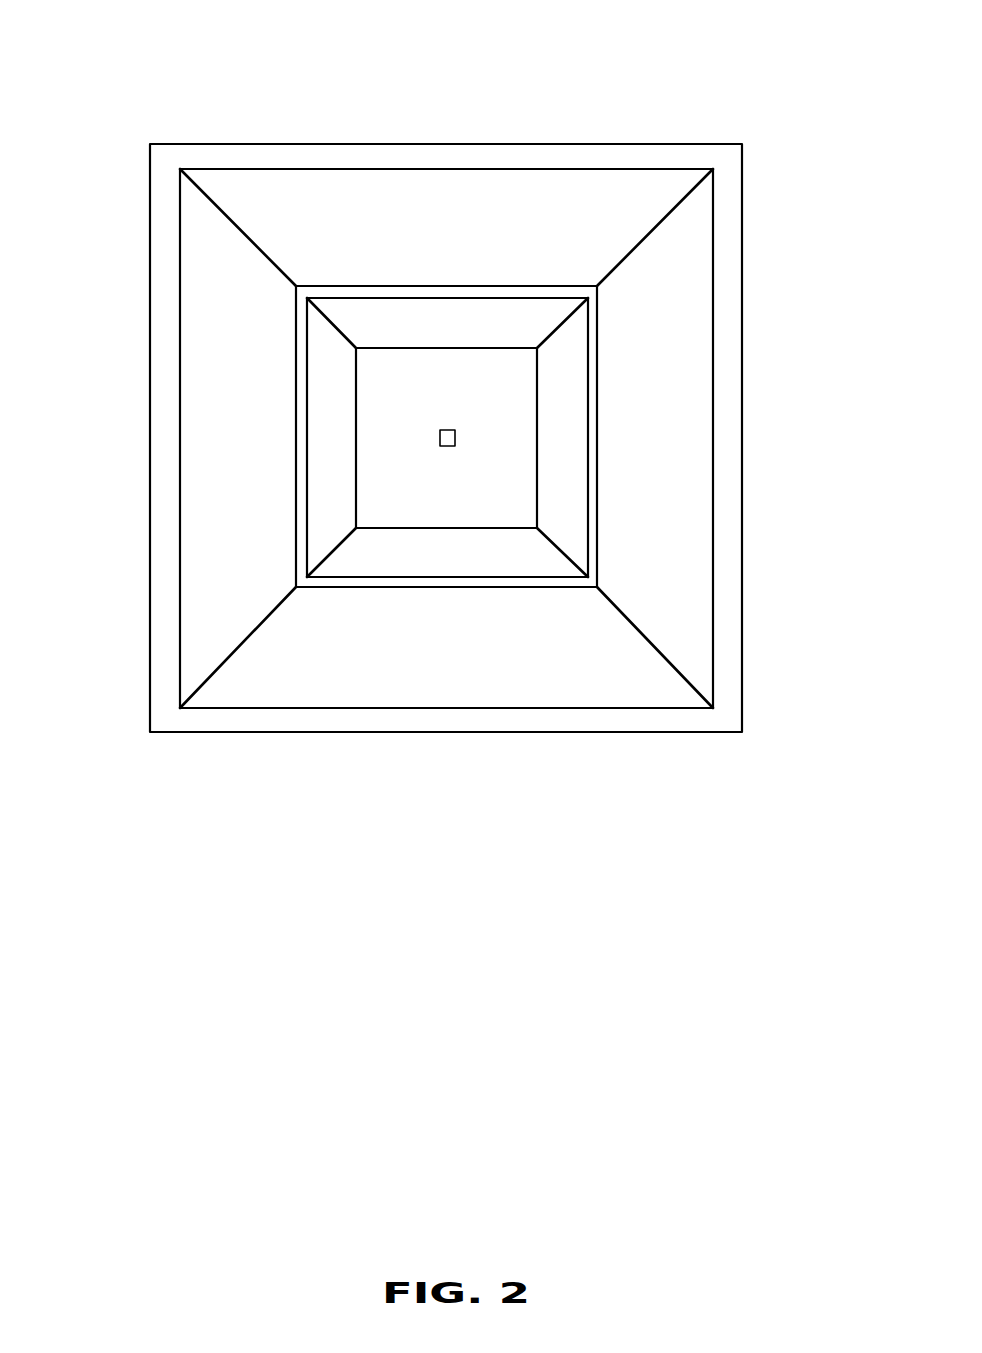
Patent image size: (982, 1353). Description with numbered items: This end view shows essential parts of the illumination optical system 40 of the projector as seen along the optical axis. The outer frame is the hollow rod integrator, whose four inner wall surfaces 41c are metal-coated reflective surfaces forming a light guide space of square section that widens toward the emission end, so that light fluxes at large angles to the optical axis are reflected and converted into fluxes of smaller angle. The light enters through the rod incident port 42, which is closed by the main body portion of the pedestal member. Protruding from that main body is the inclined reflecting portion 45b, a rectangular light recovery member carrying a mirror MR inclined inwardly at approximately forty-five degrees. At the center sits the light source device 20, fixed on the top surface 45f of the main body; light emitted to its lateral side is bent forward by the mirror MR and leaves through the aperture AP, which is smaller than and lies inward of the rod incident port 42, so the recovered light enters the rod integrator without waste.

The illumination optical system 40 is at (690, 114).
The inner wall surfaces 41c is at (423, 210).
The inclined reflecting portion 45b is at (308, 370).
The mirror MR is at (503, 318).
The top surface 45f is at (383, 486).
The light source device 20 is at (456, 432).
The rod incident port 42 is at (393, 578).
The aperture AP is at (350, 578).